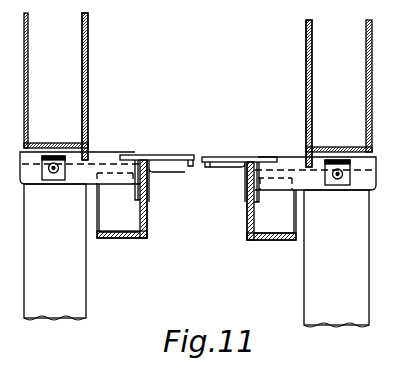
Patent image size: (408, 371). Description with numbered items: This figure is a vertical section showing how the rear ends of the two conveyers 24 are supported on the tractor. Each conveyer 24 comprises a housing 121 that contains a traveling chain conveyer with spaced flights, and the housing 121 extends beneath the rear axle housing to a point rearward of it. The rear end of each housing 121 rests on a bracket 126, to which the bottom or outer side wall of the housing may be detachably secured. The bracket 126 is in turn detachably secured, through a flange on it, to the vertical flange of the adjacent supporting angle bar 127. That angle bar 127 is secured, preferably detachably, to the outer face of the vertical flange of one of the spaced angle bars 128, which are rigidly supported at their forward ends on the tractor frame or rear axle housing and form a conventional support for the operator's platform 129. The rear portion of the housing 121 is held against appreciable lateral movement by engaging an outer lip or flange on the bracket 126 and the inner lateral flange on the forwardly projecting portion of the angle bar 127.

The conveyer 24 is at (66, 27).
The housing 121 is at (88, 69).
The bracket 126 is at (75, 185).
The supporting angle bar 127 is at (120, 238).
The angle bar 128 is at (187, 171).
The operator's platform 129 is at (190, 157).